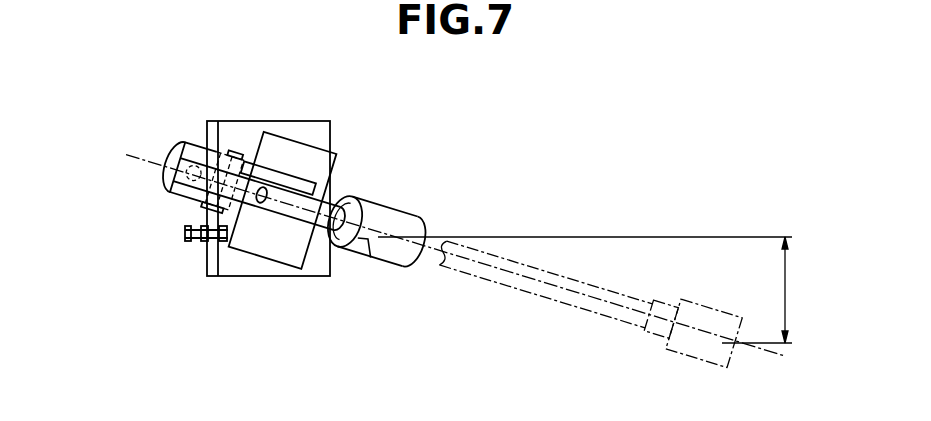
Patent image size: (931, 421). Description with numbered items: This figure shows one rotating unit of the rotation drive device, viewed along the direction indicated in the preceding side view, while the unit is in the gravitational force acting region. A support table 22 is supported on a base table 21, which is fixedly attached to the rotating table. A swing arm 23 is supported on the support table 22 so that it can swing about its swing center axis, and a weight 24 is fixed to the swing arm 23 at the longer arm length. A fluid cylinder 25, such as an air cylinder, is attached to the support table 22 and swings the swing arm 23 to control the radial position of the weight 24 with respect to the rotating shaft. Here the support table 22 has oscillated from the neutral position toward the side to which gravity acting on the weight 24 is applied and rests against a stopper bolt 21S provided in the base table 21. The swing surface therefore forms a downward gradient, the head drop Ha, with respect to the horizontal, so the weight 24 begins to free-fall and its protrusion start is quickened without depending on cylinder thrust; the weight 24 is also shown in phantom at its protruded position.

The base table 21 is at (313, 121).
The stopper bolt 21S is at (185, 244).
The support table 22 is at (316, 162).
The swing arm 23 is at (168, 172).
The weight 24 is at (388, 258).
The fluid cylinder 25 is at (176, 144).
The head drop Ha is at (597, 290).